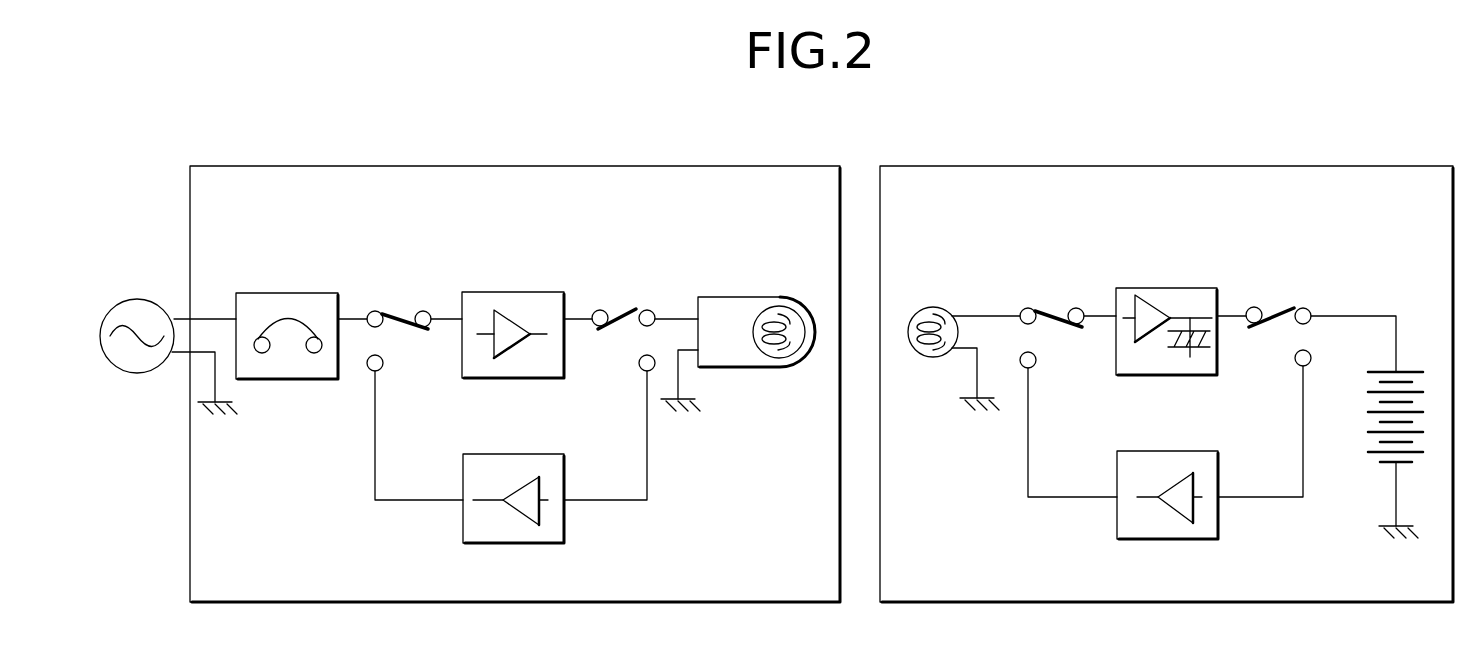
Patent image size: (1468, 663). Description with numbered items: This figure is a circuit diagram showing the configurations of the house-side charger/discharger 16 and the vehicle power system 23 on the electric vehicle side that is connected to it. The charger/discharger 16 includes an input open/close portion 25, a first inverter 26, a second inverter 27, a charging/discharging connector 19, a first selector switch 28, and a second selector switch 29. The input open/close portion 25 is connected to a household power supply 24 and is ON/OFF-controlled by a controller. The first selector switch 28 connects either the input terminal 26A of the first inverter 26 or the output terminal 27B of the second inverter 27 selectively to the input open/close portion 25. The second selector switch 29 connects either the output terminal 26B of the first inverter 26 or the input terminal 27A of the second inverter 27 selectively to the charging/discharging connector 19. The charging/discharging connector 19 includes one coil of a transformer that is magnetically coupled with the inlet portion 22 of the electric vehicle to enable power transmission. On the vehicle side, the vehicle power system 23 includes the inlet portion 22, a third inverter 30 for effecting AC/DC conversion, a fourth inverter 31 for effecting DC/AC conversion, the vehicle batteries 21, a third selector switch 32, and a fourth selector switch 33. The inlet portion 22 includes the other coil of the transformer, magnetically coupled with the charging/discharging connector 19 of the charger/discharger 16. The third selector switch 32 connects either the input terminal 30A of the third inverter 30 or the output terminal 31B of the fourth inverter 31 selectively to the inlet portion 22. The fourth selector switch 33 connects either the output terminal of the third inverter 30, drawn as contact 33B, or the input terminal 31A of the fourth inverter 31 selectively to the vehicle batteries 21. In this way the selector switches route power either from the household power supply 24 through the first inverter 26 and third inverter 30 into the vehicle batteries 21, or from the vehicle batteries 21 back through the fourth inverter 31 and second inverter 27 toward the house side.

The charger/discharger 16 is at (511, 612).
The charging/discharging connector 19 is at (745, 297).
The vehicle batteries 21 is at (1368, 405).
The inlet portion 22 is at (932, 305).
The vehicle power system 23 is at (1166, 607).
The household power supply 24 is at (133, 299).
The input open/close portion 25 is at (286, 293).
The first inverter 26 is at (509, 292).
The input terminal of the first inverter 26A is at (425, 310).
The output terminal of the first inverter 26B is at (599, 310).
The second inverter 27 is at (506, 454).
The input terminal of the second inverter 27A is at (639, 363).
The output terminal of the second inverter 27B is at (383, 364).
The first selector switch 28 is at (391, 309).
The second selector switch 29 is at (636, 307).
The third inverter 30 is at (1169, 288).
The input terminal of the third inverter 30A is at (1075, 308).
The fourth inverter 31 is at (1161, 451).
The input terminal of the fourth inverter 31A is at (1294, 359).
The output terminal of the fourth inverter 31B is at (1036, 362).
The third selector switch 32 is at (1043, 309).
The fourth selector switch 33 is at (1290, 307).
The switch contact 33B is at (1253, 307).